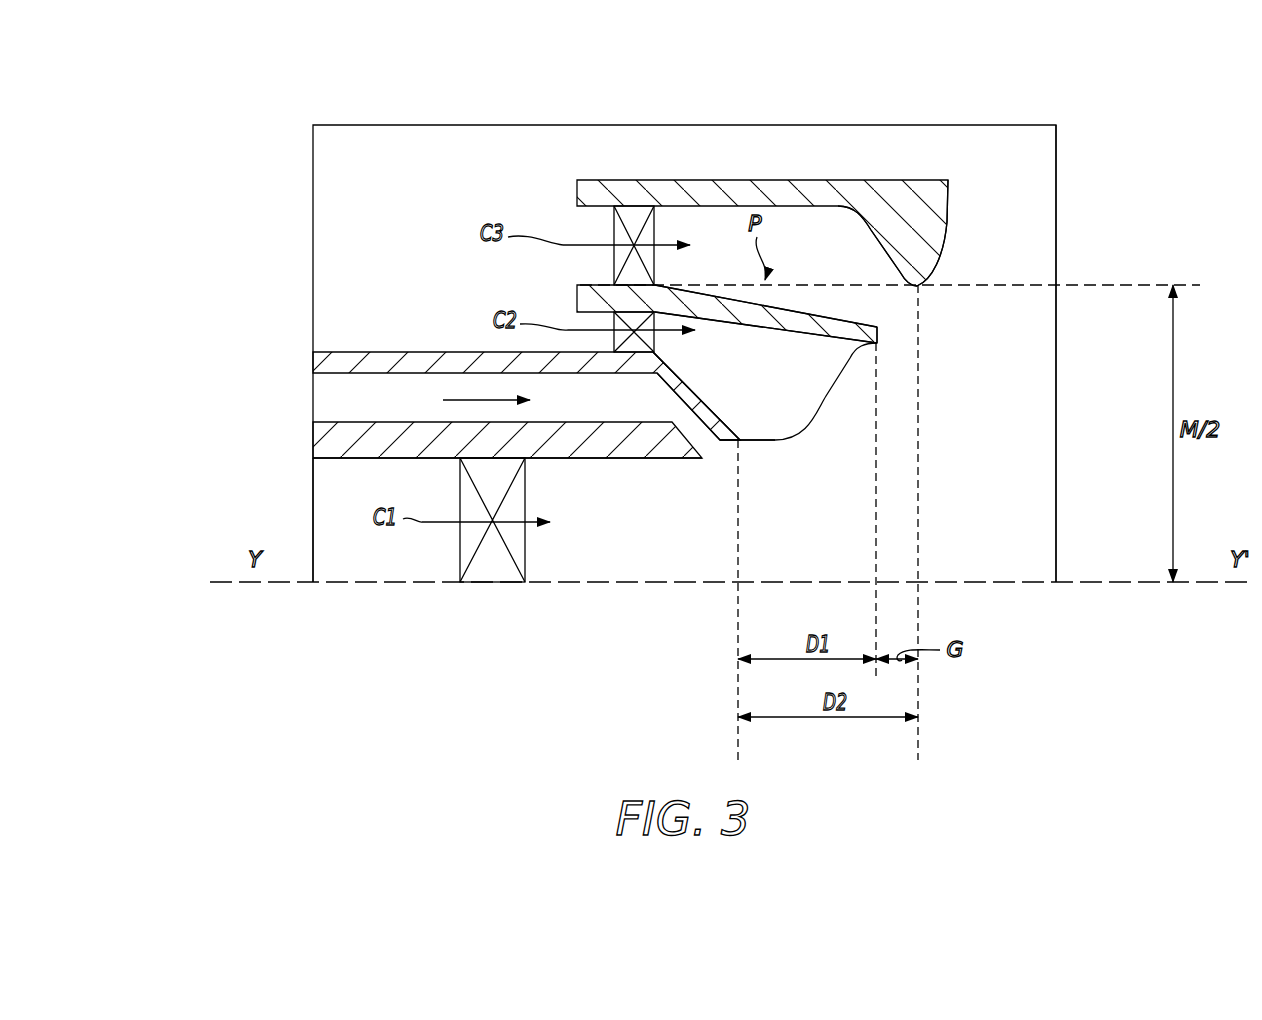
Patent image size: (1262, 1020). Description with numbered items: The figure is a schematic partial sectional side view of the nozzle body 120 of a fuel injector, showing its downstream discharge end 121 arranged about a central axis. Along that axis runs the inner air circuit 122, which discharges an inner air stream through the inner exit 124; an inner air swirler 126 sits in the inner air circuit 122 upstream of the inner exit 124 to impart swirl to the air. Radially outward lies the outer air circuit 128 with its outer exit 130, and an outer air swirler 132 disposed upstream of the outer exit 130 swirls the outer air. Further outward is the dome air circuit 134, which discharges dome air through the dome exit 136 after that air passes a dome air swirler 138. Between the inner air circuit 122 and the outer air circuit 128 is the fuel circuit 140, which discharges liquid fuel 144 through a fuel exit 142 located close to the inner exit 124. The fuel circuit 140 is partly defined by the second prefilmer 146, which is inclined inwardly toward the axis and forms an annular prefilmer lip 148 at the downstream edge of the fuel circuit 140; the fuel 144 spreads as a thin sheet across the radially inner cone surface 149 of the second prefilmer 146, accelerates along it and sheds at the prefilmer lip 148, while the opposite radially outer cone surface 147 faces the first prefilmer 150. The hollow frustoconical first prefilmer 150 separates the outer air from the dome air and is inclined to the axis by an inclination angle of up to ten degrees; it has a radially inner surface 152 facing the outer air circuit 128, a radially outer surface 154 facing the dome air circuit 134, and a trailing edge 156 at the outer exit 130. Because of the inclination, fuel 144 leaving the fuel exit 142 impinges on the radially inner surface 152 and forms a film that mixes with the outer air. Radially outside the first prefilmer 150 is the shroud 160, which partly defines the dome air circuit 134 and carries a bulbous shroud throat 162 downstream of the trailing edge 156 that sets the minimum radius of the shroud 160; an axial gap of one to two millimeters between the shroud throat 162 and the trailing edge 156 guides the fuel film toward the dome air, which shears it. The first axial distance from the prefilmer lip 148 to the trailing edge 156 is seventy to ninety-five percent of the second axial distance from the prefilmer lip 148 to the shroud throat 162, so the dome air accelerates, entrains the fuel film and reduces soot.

The nozzle body 120 is at (262, 99).
The downstream discharge end 121 is at (947, 466).
The inner air circuit 122 is at (355, 482).
The inner exit 124 is at (700, 558).
The inner air swirler 126 is at (522, 543).
The outer air circuit 128 is at (590, 317).
The outer exit 130 is at (850, 410).
The outer air swirler 132 is at (614, 333).
The dome air circuit 134 is at (583, 222).
The dome exit 136 is at (899, 309).
The dome air swirler 138 is at (633, 214).
The fuel circuit 140 is at (355, 400).
The fuel exit 142 is at (710, 452).
The fuel 144 is at (472, 404).
The second prefilmer 146 is at (672, 379).
The radially outer cone surface 147 is at (678, 374).
The prefilmer lip 148 is at (751, 437).
The radially inner cone surface 149 is at (637, 442).
The first prefilmer 150 is at (798, 306).
The radially inner surface 152 is at (802, 334).
The radially outer surface 154 is at (834, 320).
The trailing edge 156 is at (921, 340).
The shroud 160 is at (742, 179).
The shroud throat 162 is at (927, 217).